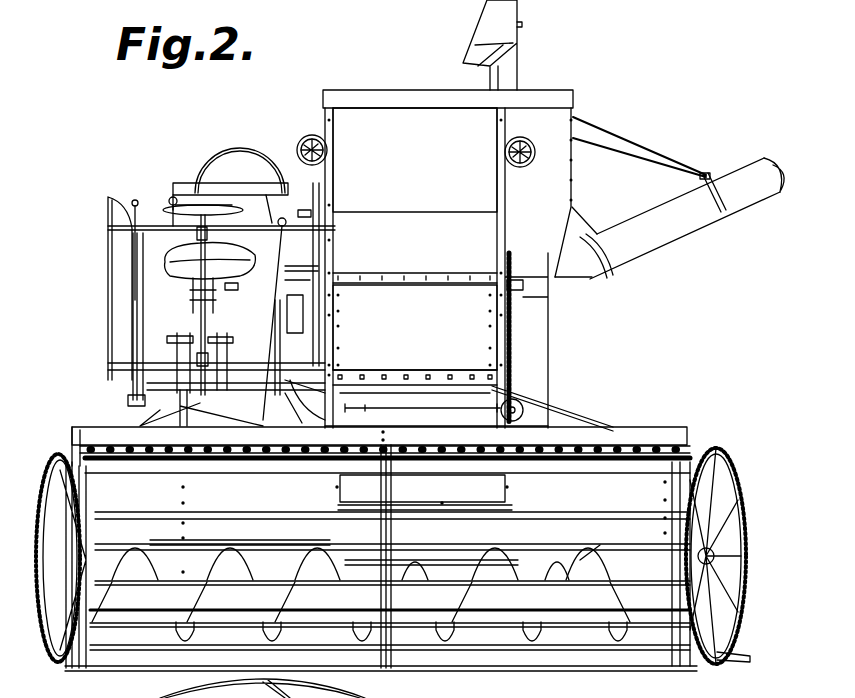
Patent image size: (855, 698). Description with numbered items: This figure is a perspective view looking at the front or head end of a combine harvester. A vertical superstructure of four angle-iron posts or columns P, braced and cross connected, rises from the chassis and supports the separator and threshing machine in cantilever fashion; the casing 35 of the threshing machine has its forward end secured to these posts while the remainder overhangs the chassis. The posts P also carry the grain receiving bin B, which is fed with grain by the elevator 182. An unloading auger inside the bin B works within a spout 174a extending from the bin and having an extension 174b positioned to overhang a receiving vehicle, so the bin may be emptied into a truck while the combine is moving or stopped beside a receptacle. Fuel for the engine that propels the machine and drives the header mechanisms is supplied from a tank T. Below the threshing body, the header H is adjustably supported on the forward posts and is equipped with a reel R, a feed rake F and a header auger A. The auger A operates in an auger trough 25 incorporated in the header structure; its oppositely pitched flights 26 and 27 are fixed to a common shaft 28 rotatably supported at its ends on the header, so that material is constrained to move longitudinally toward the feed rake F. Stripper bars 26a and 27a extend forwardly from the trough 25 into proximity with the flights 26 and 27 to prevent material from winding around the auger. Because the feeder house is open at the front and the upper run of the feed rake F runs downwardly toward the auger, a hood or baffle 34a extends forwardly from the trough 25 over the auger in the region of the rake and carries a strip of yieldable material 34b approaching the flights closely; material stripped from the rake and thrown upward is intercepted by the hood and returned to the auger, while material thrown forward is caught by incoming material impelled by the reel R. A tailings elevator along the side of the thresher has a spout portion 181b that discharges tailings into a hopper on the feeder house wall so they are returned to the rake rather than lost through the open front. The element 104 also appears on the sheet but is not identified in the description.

The elevator 182 is at (517, 72).
The grain receiving bin B is at (455, 260).
The casing 35 is at (415, 327).
The vertical posts or columns P is at (322, 118).
The spout extension 174b is at (682, 232).
The spout 174a is at (575, 278).
The fuel tank T is at (233, 313).
The spout portion 181b is at (304, 420).
The header H is at (56, 452).
The auger trough 25 is at (113, 598).
The reel R is at (700, 458).
The feed rake F is at (450, 560).
The auger flight 26 is at (230, 563).
The stripper bar 26a is at (263, 557).
The hood or baffle 34a is at (495, 528).
The strip of yieldable material 34b is at (436, 558).
The common shaft or axis 28 is at (458, 598).
The stripper bar 27a is at (537, 552).
The auger flight 27 is at (575, 560).
The header auger A is at (182, 636).
The ground wheel 104 is at (529, 697).